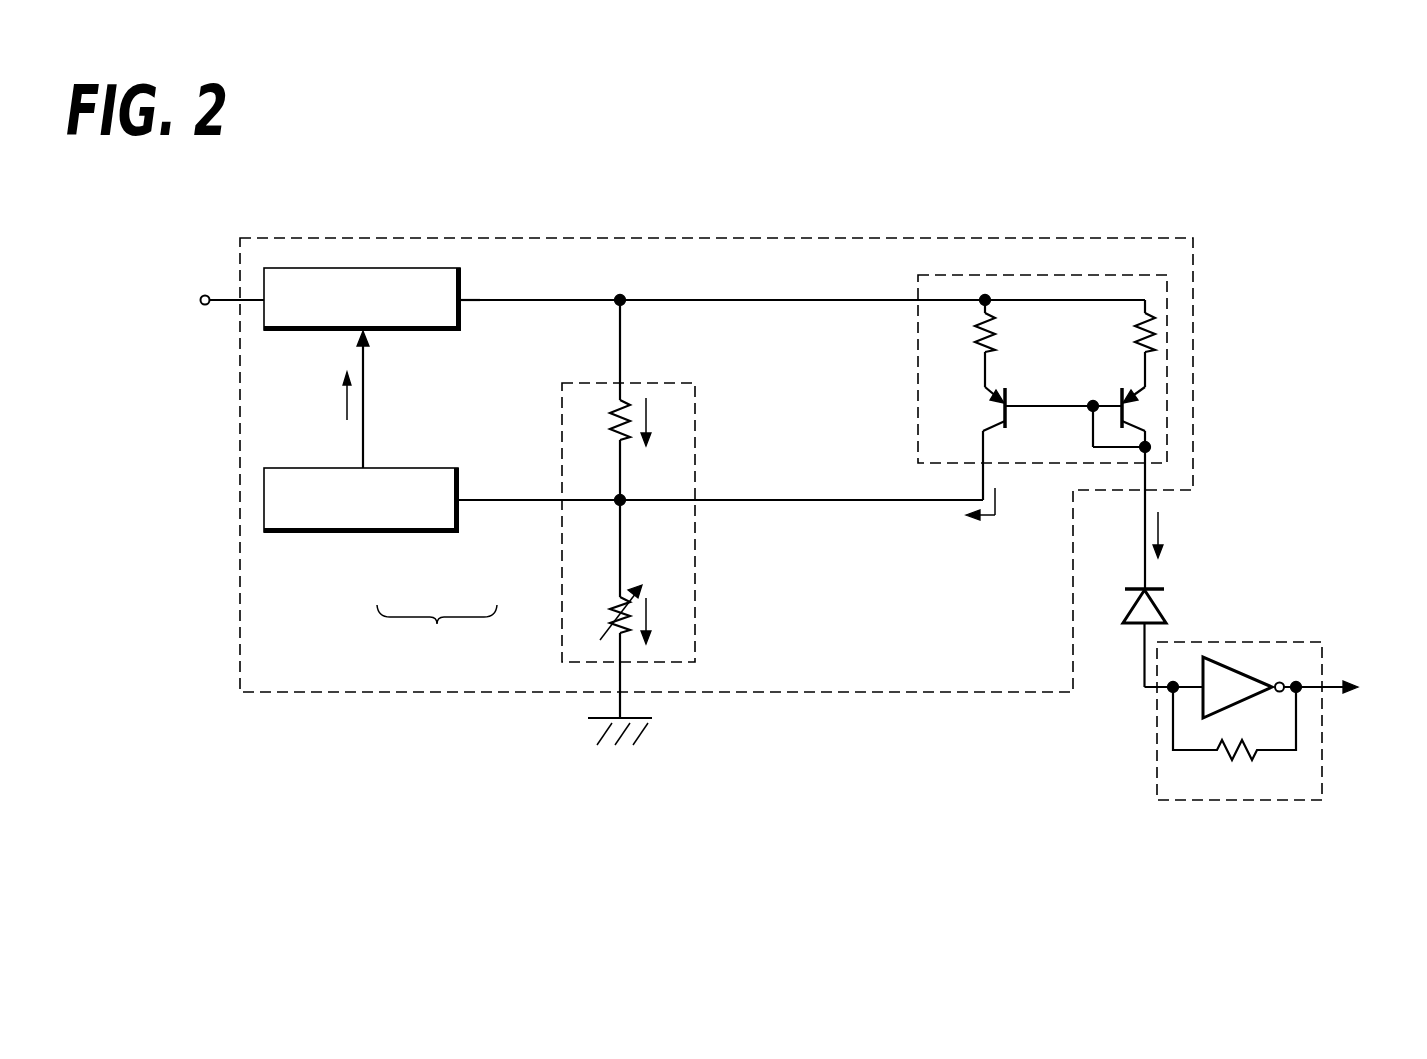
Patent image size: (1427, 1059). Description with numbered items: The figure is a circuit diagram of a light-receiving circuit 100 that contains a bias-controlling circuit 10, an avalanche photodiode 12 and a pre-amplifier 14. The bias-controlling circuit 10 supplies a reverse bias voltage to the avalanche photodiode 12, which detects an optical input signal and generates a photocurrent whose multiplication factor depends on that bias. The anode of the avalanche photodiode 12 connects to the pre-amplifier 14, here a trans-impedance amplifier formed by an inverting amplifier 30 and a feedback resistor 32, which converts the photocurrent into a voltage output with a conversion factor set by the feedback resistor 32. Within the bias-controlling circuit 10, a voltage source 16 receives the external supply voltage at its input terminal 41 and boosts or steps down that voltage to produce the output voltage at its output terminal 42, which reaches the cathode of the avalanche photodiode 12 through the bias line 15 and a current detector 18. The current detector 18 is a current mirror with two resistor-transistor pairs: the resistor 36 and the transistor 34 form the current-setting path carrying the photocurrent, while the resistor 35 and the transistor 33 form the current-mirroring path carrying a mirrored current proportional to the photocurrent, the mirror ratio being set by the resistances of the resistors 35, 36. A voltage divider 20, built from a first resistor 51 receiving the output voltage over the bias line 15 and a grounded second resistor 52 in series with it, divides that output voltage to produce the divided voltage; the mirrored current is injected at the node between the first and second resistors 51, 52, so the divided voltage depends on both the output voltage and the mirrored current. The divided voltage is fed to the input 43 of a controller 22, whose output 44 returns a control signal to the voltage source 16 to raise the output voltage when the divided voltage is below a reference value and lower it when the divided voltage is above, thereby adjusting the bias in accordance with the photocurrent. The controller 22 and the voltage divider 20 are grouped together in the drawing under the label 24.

The light-receiving circuit 100 is at (1277, 223).
The bias-controlling circuit 10 is at (1063, 237).
The avalanche photodiode 12 is at (1157, 613).
The pre-amplifier 14 is at (1322, 753).
The bias line 15 is at (795, 298).
The voltage source 16 is at (361, 268).
The current detector 18 is at (1167, 352).
The voltage divider 20 is at (562, 556).
The controller 22 is at (392, 535).
The control unit 24 is at (437, 629).
The inverting amplifier 30 is at (1228, 680).
The feedback resistor 32 is at (1226, 757).
The transistor 33 is at (1008, 426).
The transistor 34 is at (1120, 390).
The resistor 35 is at (980, 322).
The resistor 36 is at (1152, 323).
The input terminal 41 is at (205, 296).
The output terminal 42 is at (462, 303).
The input 43 is at (459, 497).
The output 44 is at (363, 466).
The first resistor 51 is at (630, 405).
The second resistor 52 is at (615, 637).